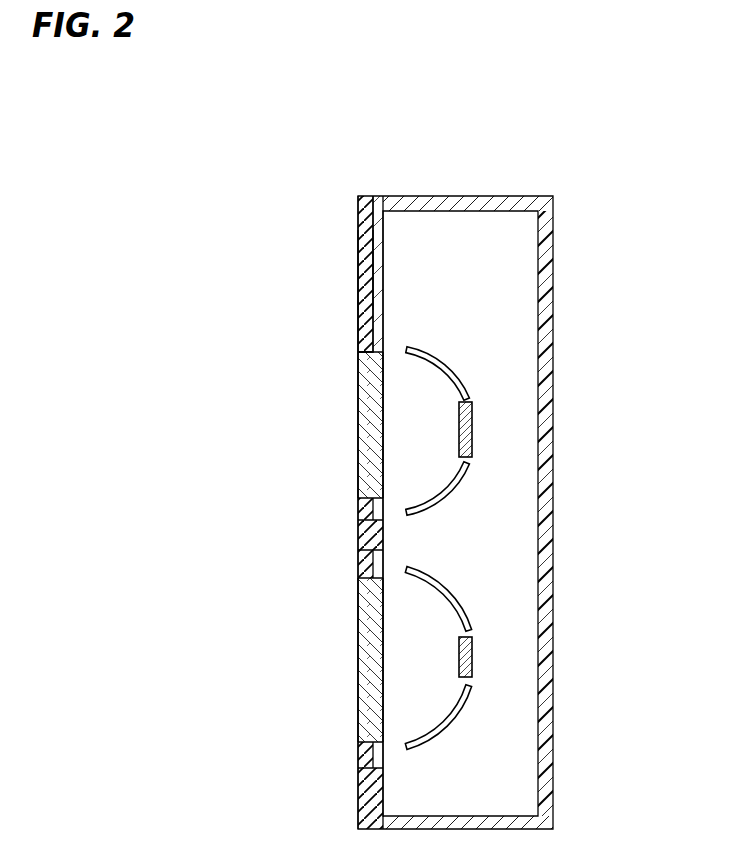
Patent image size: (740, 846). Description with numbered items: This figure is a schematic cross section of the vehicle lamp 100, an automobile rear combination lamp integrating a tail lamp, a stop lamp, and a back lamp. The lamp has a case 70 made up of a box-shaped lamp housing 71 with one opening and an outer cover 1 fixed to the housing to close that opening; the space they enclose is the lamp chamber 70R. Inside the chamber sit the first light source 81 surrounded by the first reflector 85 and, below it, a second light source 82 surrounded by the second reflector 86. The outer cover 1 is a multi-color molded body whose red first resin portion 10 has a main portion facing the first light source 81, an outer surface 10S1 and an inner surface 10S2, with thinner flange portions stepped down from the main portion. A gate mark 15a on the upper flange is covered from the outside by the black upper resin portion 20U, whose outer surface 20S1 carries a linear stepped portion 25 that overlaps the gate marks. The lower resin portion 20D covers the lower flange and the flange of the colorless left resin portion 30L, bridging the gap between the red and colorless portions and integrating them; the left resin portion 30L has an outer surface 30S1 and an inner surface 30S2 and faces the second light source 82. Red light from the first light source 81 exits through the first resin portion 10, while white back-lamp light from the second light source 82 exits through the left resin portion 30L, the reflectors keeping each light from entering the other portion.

The vehicle lamp 100 is at (295, 126).
The case 70 is at (442, 133).
The outer cover 1 is at (370, 194).
The lamp housing 71 is at (431, 196).
The lamp chamber 70R is at (494, 230).
The upper resin portion 20U is at (358, 232).
The gate mark 15a is at (371, 269).
The stepped portion 25 is at (356, 270).
The outer surface of the second resin portion 20S1 is at (358, 322).
The outer surface of the first resin portion 10S1 is at (358, 378).
The first resin portion 10 is at (368, 418).
The inner surface of the first resin portion 10S2 is at (393, 462).
The lower resin portion 20D is at (370, 540).
The outer surface of the third resin portion 30S1 is at (358, 625).
The left resin portion 30L is at (358, 660).
The inner surface of the third resin portion 30S2 is at (393, 709).
The first reflector 85 is at (472, 383).
The first light source 81 is at (465, 430).
The second reflector 86 is at (463, 597).
The second light source 82 is at (465, 663).